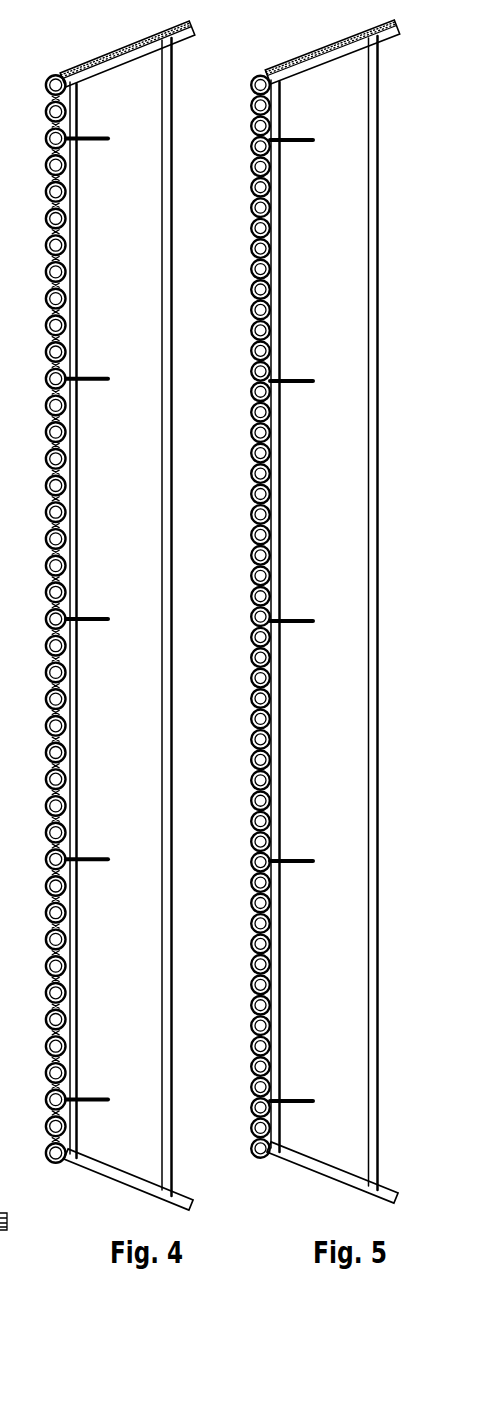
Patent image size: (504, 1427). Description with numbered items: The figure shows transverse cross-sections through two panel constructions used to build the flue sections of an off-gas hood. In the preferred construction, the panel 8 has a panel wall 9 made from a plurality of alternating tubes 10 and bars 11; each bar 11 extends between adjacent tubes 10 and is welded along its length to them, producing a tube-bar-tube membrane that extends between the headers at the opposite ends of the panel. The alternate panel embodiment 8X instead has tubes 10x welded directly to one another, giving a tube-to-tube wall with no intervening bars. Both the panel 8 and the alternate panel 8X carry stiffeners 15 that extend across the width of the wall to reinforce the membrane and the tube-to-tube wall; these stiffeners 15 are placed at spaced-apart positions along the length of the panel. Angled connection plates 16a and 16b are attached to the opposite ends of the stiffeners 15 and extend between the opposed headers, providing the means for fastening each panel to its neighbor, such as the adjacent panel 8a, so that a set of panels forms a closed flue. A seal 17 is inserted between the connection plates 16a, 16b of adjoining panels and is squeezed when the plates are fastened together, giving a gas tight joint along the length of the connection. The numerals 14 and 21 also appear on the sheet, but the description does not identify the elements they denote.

In FIG. 4, the panel 8 is at (54, 619).
In FIG. 5, the alternate panel embodiment 8X is at (248, 617).
In FIG. 4, the panel 8a is at (4, 1138).
In FIG. 4, the panel wall 9 is at (45, 915).
In FIG. 5, the panel wall 9 is at (248, 947).
In FIG. 4, the tubes 10 is at (47, 241).
In FIG. 5, the tubes 10x is at (252, 350).
In FIG. 4, the bars 11 is at (47, 391).
In FIG. 4, the chain side 14 is at (3, 505).
In FIG. 4, the stiffeners 15 is at (128, 549).
In FIG. 5, the stiffeners 15 is at (342, 705).
In FIG. 4, the angled connection plate 16a is at (127, 67).
In FIG. 5, the angled connection plate 16a is at (323, 64).
In FIG. 4, the angled connection plate 16b is at (137, 1188).
In FIG. 5, the angled connection plate 16b is at (335, 1178).
In FIG. 4, the seal 17 is at (118, 44).
In FIG. 5, the seal 17 is at (330, 46).
In FIG. 4, the mounting bracket 21 is at (0, 1243).